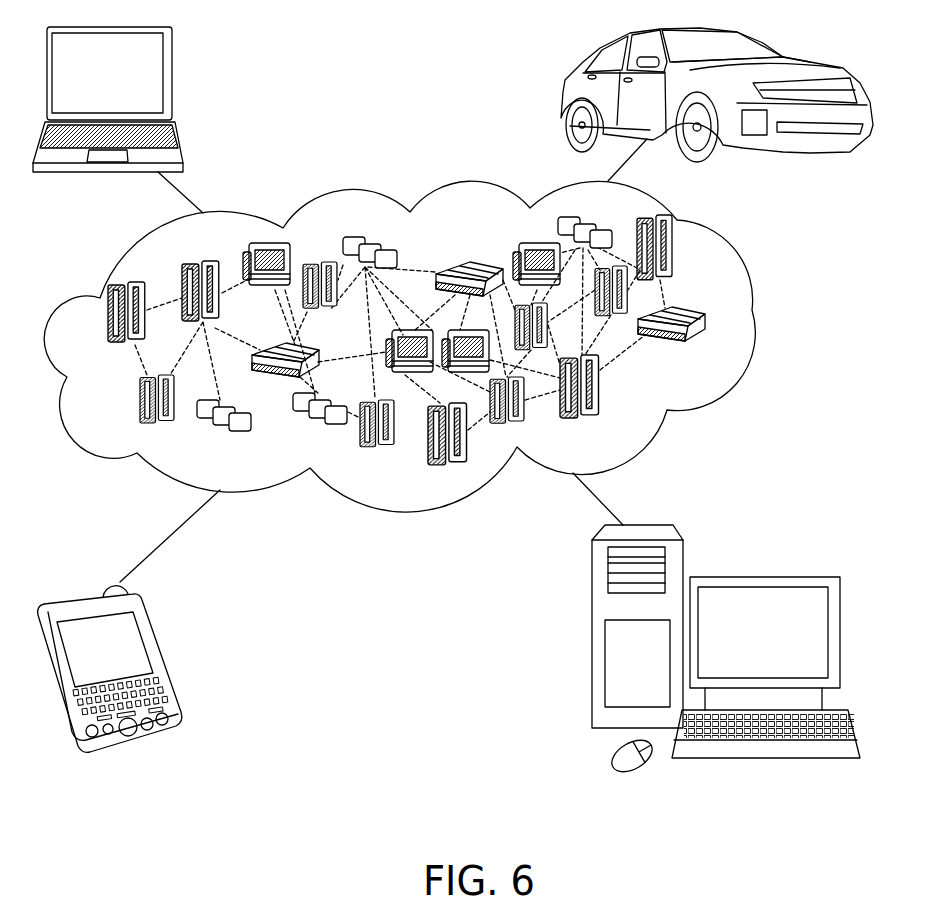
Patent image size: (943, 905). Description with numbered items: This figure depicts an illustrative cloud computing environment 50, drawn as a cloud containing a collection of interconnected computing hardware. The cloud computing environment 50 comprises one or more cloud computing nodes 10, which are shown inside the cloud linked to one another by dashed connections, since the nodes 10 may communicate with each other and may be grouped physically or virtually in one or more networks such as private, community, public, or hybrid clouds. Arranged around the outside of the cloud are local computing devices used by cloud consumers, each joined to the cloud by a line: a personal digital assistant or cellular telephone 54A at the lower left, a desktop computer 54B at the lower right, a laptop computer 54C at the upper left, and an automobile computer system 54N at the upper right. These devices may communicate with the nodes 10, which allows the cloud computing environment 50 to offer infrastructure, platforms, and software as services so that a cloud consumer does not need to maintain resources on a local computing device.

The cloud computing node 10 is at (708, 348).
The cloud computing environment 50 is at (763, 320).
The personal digital assistant or cellular telephone 54A is at (165, 658).
The desktop computer 54B is at (762, 577).
The laptop computer 54C is at (172, 83).
The automobile computer system 54N is at (564, 97).